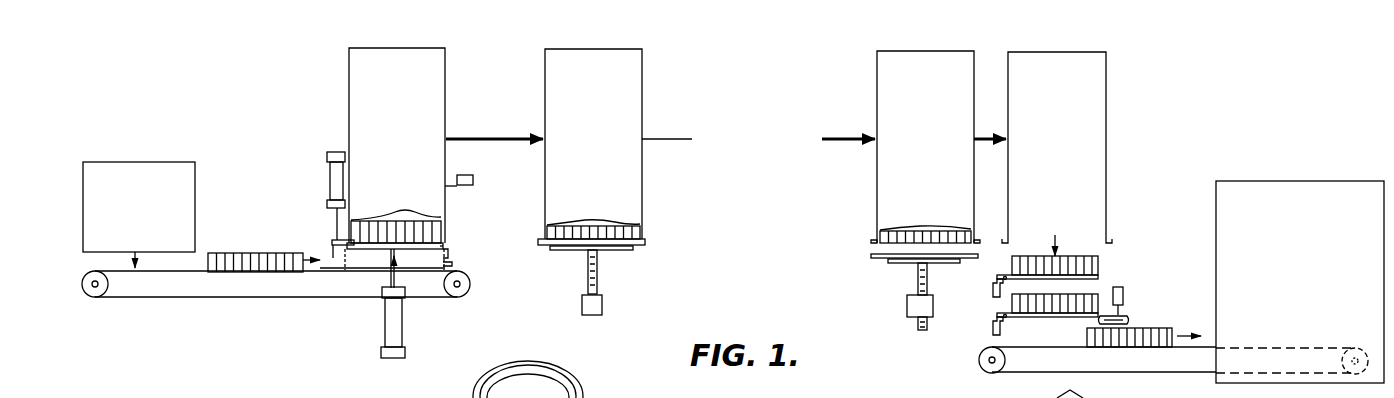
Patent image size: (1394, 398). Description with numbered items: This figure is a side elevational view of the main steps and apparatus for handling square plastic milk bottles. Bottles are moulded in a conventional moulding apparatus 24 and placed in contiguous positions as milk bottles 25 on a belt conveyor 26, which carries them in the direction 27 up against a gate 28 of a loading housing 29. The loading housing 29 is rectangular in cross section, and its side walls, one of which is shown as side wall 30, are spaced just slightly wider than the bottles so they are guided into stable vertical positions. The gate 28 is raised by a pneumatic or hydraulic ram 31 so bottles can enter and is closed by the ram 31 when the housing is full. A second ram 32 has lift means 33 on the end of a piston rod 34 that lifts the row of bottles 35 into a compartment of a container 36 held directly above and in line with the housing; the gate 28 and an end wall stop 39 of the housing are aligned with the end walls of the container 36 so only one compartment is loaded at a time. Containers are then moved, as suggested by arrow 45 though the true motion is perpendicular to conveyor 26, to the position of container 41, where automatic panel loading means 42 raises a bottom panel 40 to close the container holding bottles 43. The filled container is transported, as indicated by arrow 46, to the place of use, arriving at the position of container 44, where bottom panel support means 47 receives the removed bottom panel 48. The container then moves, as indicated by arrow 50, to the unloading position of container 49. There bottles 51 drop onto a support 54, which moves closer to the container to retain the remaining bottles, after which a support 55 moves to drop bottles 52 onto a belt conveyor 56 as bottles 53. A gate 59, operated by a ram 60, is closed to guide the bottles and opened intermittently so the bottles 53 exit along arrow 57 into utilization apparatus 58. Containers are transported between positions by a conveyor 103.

The moulding apparatus 24 is at (145, 160).
The milk bottles 25 is at (240, 252).
The belt conveyor 26 is at (163, 299).
The direction of conveyor travel 27 is at (306, 258).
The gate 28 is at (337, 258).
The loading housing 29 is at (449, 251).
The side wall 30 is at (365, 266).
The ram 31 is at (328, 181).
The second ram 32 is at (382, 324).
The lift means 33 is at (421, 249).
The piston rod 34 is at (408, 264).
The milk bottles being lifted 35 is at (408, 224).
The container 36 is at (384, 145).
The end wall stop 39 is at (448, 262).
The bottom panel 40 is at (645, 246).
The container at panel loading position 41 is at (645, 93).
The panel loading means 42 is at (606, 282).
The milk bottles in container 41 43 is at (618, 224).
The container at panel removal position 44 is at (875, 69).
The arrow 45 is at (466, 138).
The transportation arrow 46 is at (850, 143).
The bottom panel support means 47 is at (906, 276).
The bottom panel 48 is at (877, 258).
The container in unloading position 49 is at (1086, 154).
The arrow 50 is at (997, 117).
The milk bottles 51 is at (1098, 264).
The milk bottles 52 is at (1100, 290).
The milk bottles on conveyor 53 is at (1153, 331).
The support 54 is at (1025, 276).
The support 55 is at (1030, 318).
The belt conveyor 56 is at (1022, 374).
The arrow 57 is at (1188, 346).
The utilization apparatus 58 is at (1290, 180).
The gate 59 is at (1124, 314).
The ram 60 is at (1124, 294).
The conveyor 103 is at (474, 172).